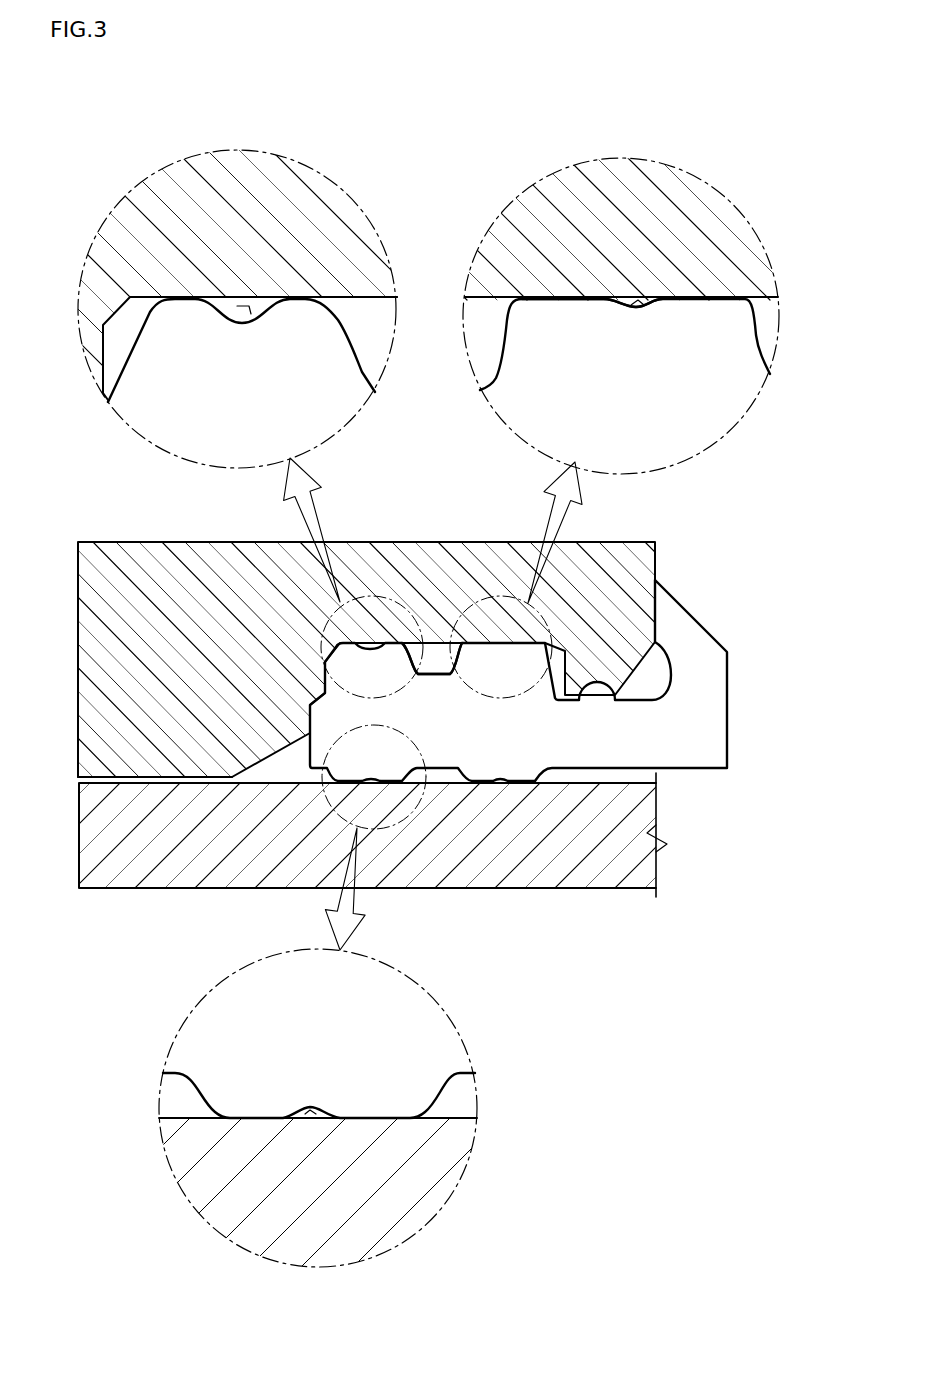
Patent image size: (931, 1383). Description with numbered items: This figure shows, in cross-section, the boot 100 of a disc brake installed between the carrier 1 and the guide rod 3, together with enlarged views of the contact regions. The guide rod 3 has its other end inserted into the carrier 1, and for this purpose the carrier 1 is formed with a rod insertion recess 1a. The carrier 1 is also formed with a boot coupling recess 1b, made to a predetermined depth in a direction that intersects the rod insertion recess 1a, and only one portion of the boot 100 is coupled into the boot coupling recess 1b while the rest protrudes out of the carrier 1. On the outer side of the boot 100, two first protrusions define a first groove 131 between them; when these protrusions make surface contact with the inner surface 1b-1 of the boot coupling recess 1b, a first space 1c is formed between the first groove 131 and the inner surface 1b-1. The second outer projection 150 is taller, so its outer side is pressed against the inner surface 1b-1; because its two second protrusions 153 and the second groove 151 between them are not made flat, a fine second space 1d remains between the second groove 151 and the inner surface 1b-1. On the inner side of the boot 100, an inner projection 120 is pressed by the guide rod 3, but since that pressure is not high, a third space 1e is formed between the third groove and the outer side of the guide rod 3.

The carrier 1 is at (118, 652).
The rod insertion recess 1a is at (121, 784).
The boot coupling recess 1b is at (441, 655).
The inner surface of the boot coupling recess 1b-1 is at (362, 296).
The first space 1c is at (240, 310).
The second space 1d is at (639, 300).
The third space 1e is at (310, 1113).
The guide rod 3 is at (605, 853).
The boot 100 is at (712, 793).
The inner projection 120 is at (222, 1033).
The first groove 131 is at (241, 324).
The second outer projection 150 is at (550, 388).
The second groove 151 is at (638, 307).
The second protrusion 153 is at (560, 313).